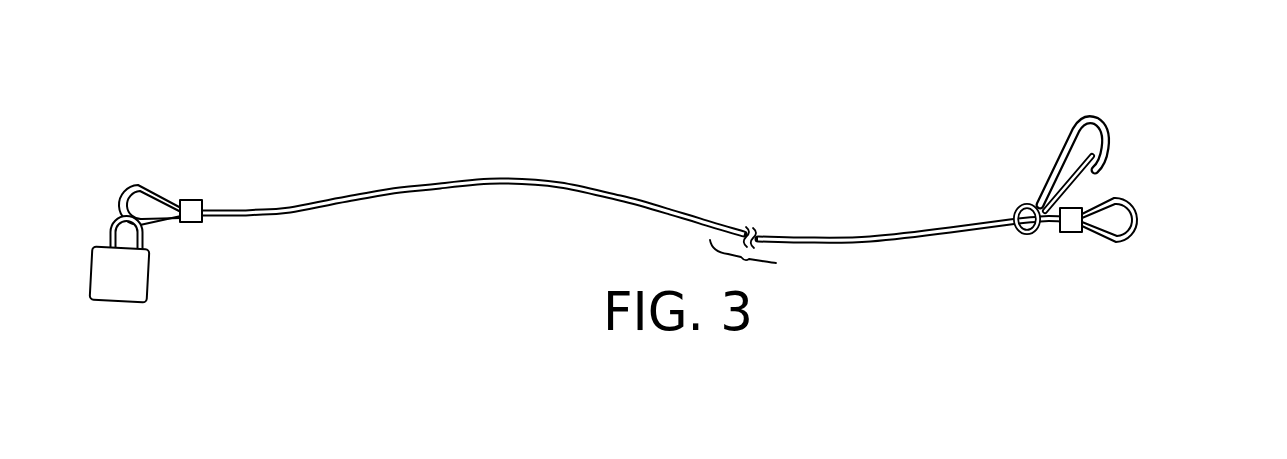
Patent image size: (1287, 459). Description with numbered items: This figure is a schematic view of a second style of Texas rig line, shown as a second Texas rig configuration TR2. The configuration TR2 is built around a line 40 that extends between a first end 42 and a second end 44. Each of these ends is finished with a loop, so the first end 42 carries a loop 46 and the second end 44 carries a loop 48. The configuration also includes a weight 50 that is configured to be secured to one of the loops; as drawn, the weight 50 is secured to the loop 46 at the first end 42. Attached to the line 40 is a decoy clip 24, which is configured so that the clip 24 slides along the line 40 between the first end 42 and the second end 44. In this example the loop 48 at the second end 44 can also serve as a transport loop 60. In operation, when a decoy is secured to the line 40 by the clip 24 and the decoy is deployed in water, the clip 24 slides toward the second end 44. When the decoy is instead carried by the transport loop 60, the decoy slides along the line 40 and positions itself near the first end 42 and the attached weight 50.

The second Texas rig configuration TR2 is at (701, 182).
The line 40 is at (518, 180).
The first end 42 is at (120, 183).
The loop 46 is at (148, 190).
The weight 50 is at (143, 277).
The decoy clip 24 is at (1042, 167).
The loop 48 is at (1122, 240).
The second end 44 is at (1148, 223).
The transport loop 60 is at (1128, 207).